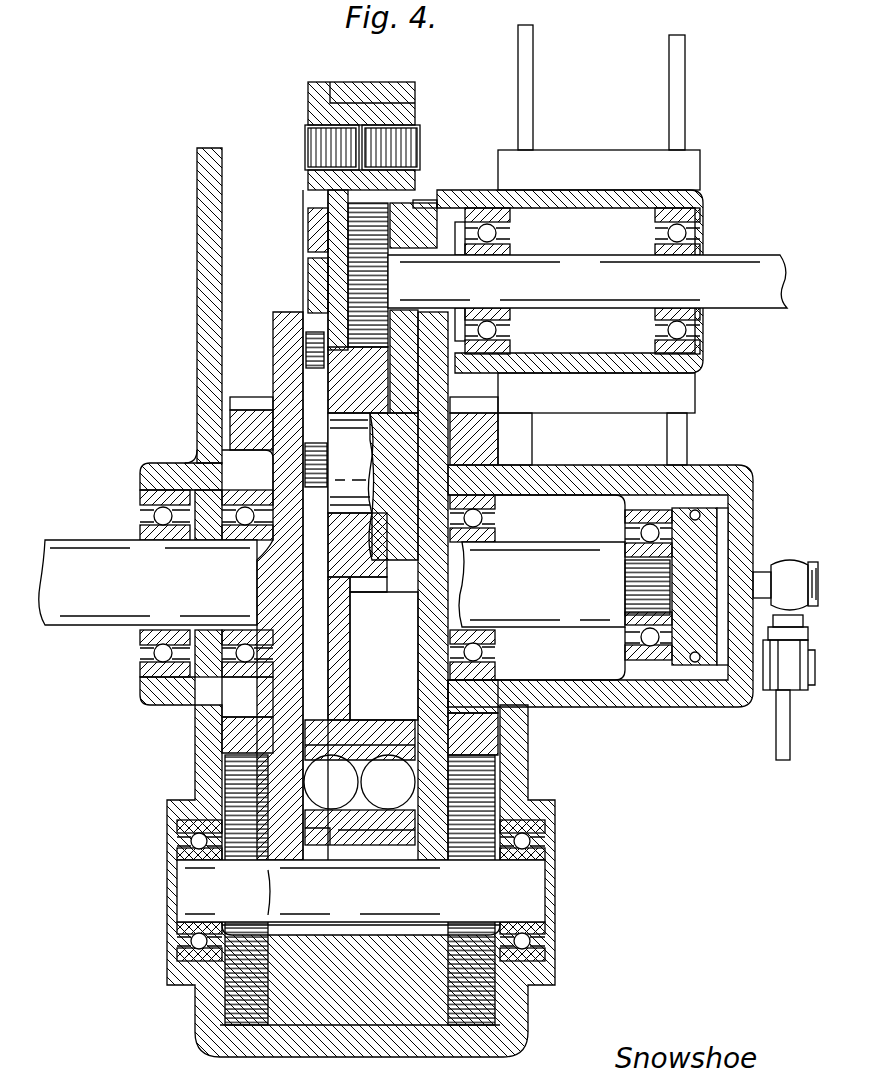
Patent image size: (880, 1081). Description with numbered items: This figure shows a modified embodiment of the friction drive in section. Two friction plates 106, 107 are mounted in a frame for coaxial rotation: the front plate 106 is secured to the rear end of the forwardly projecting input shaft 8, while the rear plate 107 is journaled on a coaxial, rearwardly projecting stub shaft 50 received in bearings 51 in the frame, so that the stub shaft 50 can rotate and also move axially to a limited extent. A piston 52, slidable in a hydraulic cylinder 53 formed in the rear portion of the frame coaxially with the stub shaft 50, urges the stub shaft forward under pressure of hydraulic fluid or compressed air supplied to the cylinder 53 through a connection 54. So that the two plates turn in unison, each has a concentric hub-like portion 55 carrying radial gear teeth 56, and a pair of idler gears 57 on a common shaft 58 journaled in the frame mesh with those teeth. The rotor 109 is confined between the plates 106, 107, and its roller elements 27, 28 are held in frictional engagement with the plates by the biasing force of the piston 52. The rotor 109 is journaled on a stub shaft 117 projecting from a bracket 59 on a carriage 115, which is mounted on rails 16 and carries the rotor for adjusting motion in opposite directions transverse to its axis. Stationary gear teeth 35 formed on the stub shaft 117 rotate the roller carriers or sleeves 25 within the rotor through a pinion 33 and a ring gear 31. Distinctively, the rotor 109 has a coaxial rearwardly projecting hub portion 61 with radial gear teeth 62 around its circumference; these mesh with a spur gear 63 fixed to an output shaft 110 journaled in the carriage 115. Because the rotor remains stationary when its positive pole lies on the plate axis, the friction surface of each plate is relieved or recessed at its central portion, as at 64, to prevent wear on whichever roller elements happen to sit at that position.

The input shaft 8 is at (153, 592).
The rails 16 is at (522, 94).
The roller carriers or sleeves 25 is at (312, 180).
The roller element 27 is at (330, 146).
The roller element 28 is at (395, 146).
The ring gear 31 is at (308, 230).
The pinion 33 is at (308, 280).
The stationary gear teeth 35 is at (325, 476).
The stub shaft 50 is at (578, 594).
The bearings 51 is at (625, 533).
The piston 52 is at (705, 660).
The hydraulic cylinder 53 is at (722, 512).
The connection 54 is at (791, 588).
The hub-like portion 55 is at (232, 430).
The radial gear teeth 56 is at (256, 402).
The idler gears 57 is at (250, 952).
The common shaft 58 is at (370, 907).
The bracket 59 is at (400, 390).
The hub portion 61 is at (372, 556).
The radial gear teeth 62 is at (372, 588).
The spur gear 63 is at (385, 272).
The relieved or recessed central portion 64 is at (300, 625).
The front friction plate 106 is at (306, 340).
The rear friction plate 107 is at (418, 690).
The rotor 109 is at (390, 857).
The output shaft 110 is at (606, 289).
The carriage 115 is at (600, 160).
The stub shaft 117 is at (364, 455).